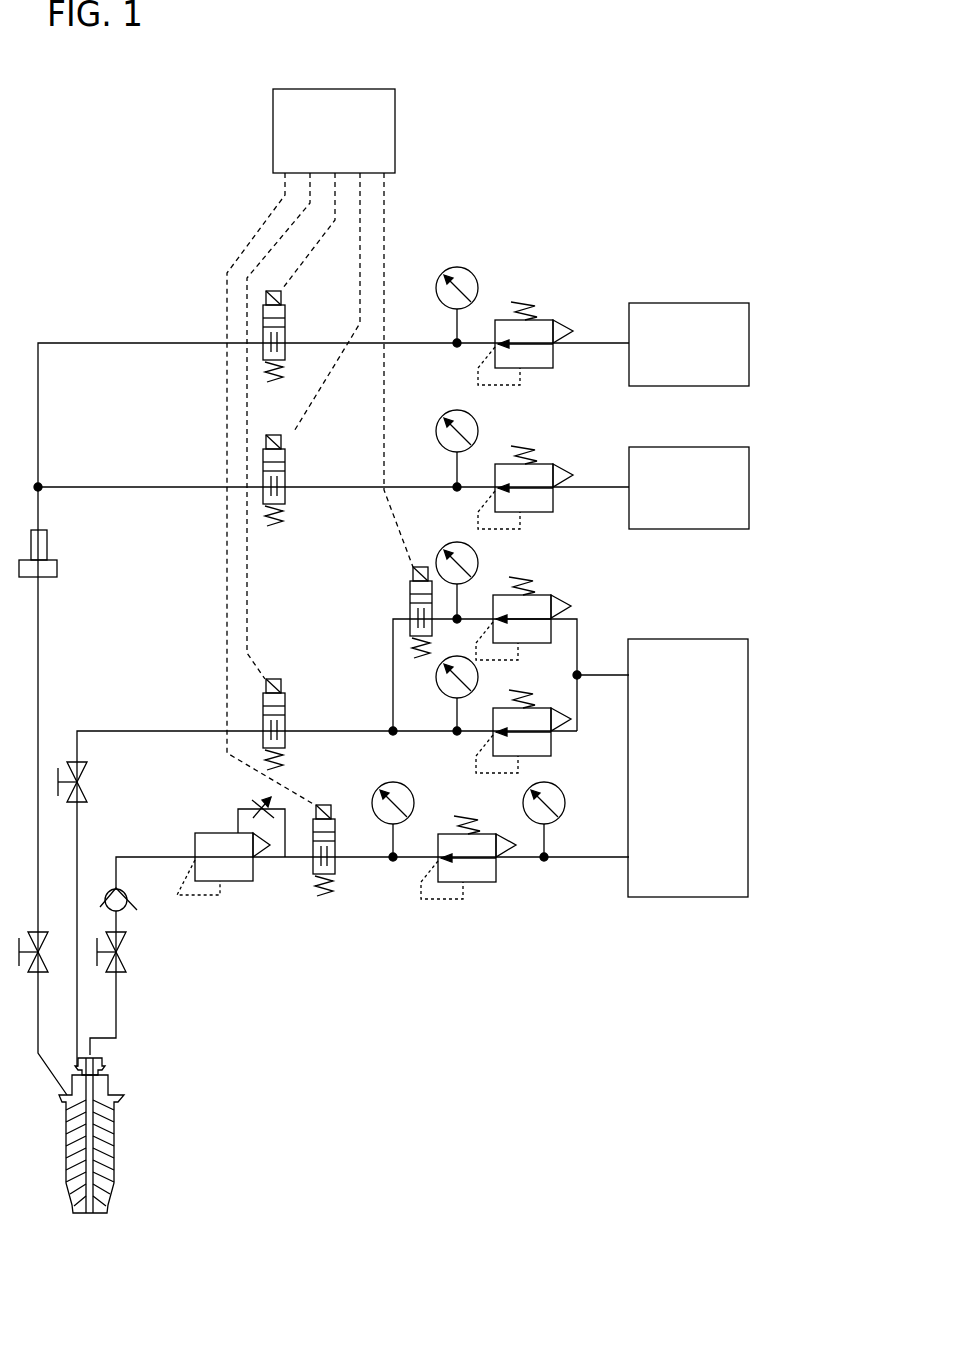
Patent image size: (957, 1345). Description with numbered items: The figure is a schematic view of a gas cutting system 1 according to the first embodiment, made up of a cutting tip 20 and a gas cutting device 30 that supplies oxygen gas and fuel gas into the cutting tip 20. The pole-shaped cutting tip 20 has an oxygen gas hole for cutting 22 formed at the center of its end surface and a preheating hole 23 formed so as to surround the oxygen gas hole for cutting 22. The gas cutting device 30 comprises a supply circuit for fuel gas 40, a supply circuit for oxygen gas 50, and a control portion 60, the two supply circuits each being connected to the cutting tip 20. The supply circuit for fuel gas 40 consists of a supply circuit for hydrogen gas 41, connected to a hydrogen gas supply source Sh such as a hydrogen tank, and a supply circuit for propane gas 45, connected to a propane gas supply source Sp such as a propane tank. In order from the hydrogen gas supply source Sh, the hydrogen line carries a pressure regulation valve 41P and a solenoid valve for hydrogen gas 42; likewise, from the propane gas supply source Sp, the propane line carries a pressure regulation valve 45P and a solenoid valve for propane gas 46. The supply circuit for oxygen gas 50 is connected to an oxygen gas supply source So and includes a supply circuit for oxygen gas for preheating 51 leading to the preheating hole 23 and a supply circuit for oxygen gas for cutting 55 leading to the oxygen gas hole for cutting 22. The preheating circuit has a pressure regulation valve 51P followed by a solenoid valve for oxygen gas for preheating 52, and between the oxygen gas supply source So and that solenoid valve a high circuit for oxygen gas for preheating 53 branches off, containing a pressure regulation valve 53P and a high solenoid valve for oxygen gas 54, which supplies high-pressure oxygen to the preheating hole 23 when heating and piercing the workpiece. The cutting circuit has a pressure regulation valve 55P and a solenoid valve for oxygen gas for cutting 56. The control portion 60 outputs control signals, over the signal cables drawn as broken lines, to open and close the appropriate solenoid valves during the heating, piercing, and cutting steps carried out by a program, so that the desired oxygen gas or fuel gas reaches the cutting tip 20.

The gas cutting system 1 is at (624, 100).
The cutting tip 20 is at (150, 1136).
The oxygen gas hole for cutting 22 is at (88, 1215).
The preheating hole 23 is at (78, 1217).
The gas cutting device 30 is at (619, 178).
The supply circuit for fuel gas 40 is at (195, 296).
The supply circuit for hydrogen gas 41 is at (110, 342).
The solenoid valve for hydrogen gas 42 is at (285, 311).
The supply circuit for propane gas 45 is at (153, 486).
The solenoid valve for propane gas 46 is at (285, 453).
The pressure regulation valve 41P is at (543, 328).
The pressure regulation valve 45P is at (543, 470).
The supply circuit for oxygen gas 50 is at (123, 674).
The supply circuit for oxygen gas for preheating 51 is at (183, 728).
The pressure regulation valve 51P is at (552, 745).
The solenoid valve for oxygen gas for preheating 52 is at (285, 695).
The high circuit for oxygen gas for preheating 53 is at (577, 632).
The pressure regulation valve 53P is at (543, 602).
The high solenoid valve for oxygen gas 54 is at (408, 587).
The supply circuit for oxygen gas for cutting 55 is at (155, 857).
The pressure regulation valve 55P is at (487, 867).
The solenoid valve for oxygen gas for cutting 56 is at (332, 822).
The control portion 60 is at (395, 131).
The hydrogen gas supply source Sh is at (750, 332).
The propane gas supply source Sp is at (750, 476).
The oxygen gas supply source So is at (749, 684).